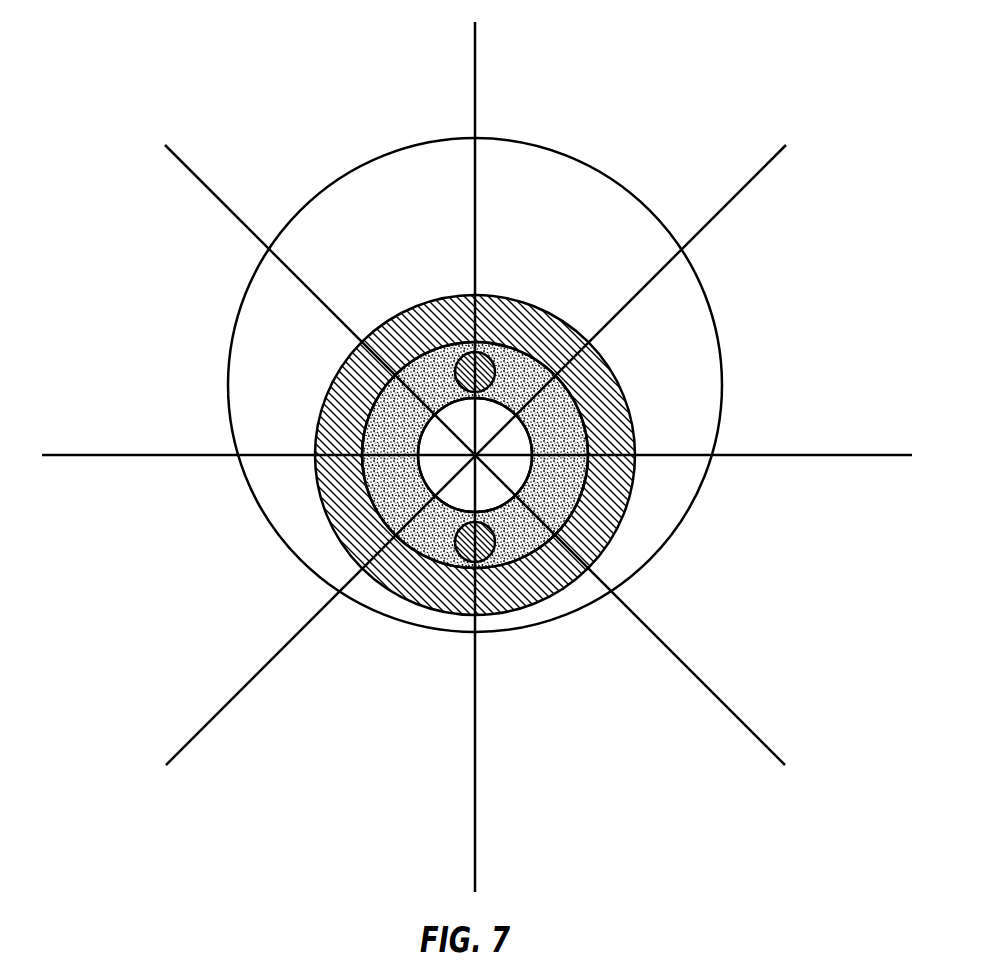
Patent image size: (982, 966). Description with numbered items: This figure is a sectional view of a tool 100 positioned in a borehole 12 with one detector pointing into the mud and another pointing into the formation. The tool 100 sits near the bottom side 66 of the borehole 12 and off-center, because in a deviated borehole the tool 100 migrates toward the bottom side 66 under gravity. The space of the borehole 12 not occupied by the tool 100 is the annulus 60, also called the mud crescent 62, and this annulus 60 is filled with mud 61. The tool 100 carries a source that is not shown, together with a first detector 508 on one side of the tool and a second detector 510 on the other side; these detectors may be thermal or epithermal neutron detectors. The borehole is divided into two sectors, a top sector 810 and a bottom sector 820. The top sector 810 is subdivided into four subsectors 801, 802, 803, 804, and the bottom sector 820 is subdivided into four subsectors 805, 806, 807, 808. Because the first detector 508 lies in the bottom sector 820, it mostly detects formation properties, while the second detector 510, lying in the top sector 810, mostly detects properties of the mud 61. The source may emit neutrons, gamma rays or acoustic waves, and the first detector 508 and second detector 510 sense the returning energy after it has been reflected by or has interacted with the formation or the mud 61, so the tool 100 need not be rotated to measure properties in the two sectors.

The borehole 12 is at (415, 455).
The annulus 60 is at (444, 385).
The mud 61 is at (590, 308).
The mud crescent 62 is at (390, 290).
The bottom side 66 is at (492, 561).
The tool 100 is at (553, 456).
The first detector 508 is at (532, 606).
The second detector 510 is at (430, 328).
The subsector 801 is at (310, 420).
The subsector 802 is at (352, 311).
The subsector 803 is at (531, 280).
The subsector 804 is at (637, 424).
The subsector 805 is at (593, 537).
The subsector 806 is at (552, 557).
The subsector 807 is at (391, 561).
The subsector 808 is at (319, 491).
The top sector 810 is at (443, 237).
The bottom sector 820 is at (444, 673).